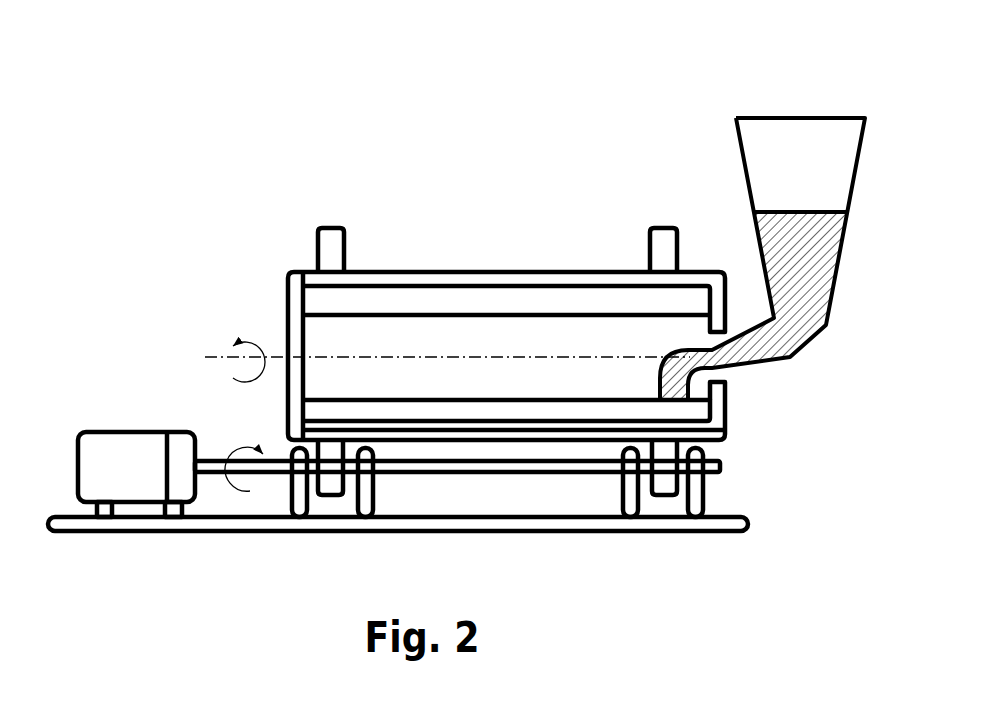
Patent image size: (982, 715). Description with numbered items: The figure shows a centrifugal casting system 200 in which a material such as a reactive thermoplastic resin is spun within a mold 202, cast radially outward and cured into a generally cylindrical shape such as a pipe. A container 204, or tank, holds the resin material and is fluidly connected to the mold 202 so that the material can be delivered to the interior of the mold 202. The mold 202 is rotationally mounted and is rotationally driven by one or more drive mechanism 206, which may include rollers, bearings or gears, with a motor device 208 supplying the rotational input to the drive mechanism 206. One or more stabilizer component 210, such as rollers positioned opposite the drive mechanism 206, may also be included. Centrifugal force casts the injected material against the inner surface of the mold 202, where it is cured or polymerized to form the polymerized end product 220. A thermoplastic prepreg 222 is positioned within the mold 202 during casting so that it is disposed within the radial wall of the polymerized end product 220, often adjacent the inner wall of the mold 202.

The centrifugal casting system 200 is at (722, 72).
The mold 202 is at (728, 447).
The container 204 is at (780, 340).
The drive mechanism 206 is at (340, 500).
The motor device 208 is at (137, 460).
The stabilizer component 210 is at (325, 226).
The polymerized end product 220 is at (457, 410).
The thermoplastic prepreg 222 is at (363, 413).